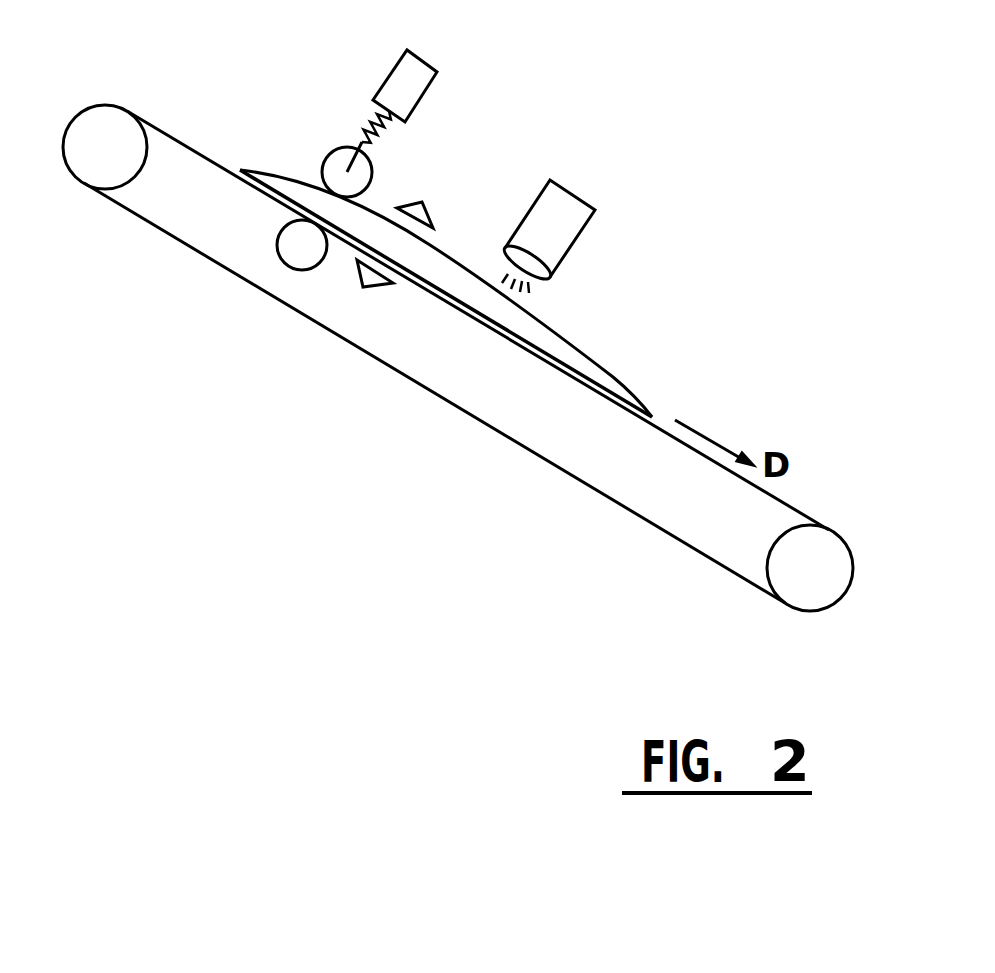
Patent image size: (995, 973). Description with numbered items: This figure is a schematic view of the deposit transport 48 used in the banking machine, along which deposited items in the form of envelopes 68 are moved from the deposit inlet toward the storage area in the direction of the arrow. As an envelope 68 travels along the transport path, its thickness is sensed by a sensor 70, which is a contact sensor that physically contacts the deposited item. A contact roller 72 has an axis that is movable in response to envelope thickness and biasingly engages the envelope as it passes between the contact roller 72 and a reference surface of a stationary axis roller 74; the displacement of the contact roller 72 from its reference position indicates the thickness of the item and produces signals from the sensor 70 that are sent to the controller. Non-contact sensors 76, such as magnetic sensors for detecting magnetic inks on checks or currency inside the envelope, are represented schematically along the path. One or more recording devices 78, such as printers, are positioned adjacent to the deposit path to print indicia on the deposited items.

The deposit transport 48 is at (598, 500).
The envelope 68 is at (613, 377).
The sensor 70 is at (419, 35).
The contact roller 72 is at (327, 157).
The stationary axis roller 74 is at (277, 253).
The non-contact sensors 76 is at (411, 200).
The recording devices 78 is at (562, 241).